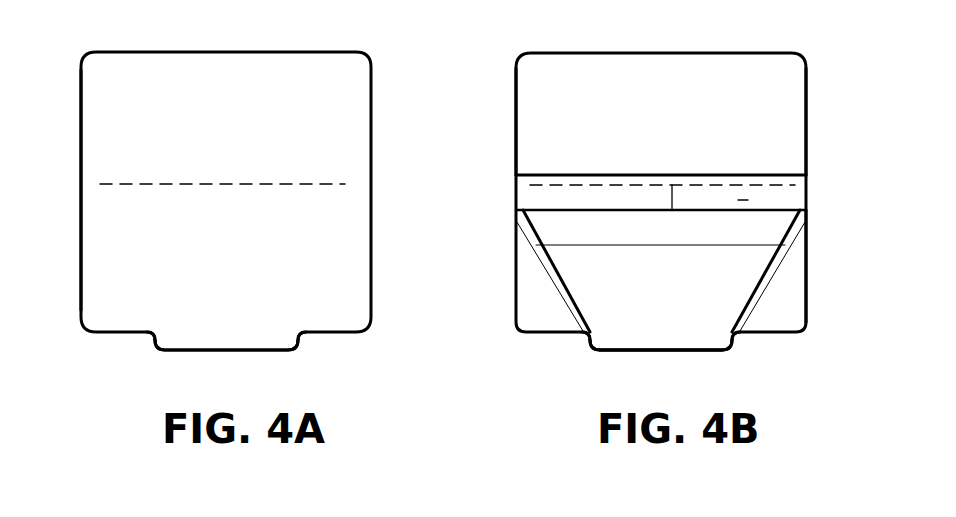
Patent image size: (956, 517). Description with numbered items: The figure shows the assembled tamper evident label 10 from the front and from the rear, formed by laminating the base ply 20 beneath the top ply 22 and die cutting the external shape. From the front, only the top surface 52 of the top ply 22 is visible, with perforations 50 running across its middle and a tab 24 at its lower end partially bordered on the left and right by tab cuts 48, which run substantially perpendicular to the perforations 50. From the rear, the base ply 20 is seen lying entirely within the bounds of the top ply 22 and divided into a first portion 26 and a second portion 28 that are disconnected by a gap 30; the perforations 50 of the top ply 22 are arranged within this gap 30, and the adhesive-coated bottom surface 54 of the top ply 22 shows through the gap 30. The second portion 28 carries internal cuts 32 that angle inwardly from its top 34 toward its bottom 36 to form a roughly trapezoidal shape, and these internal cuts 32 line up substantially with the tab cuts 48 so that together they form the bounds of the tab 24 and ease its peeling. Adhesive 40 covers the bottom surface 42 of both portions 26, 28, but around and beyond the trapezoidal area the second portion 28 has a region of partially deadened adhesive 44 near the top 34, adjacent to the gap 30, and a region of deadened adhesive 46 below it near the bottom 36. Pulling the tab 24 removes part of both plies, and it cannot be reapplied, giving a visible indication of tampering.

In FIG. 4A, the tamper evident label 10 is at (78, 48).
In FIG. 4B, the tamper evident label 10 is at (508, 48).
In FIG. 4B, the base ply 20 is at (514, 107).
In FIG. 4A, the top ply 22 is at (79, 125).
In FIG. 4B, the top ply 22 is at (514, 197).
In FIG. 4A, the tab 24 is at (230, 353).
In FIG. 4B, the tab 24 is at (661, 353).
In FIG. 4B, the first portion 26 is at (809, 103).
In FIG. 4B, the second portion 28 is at (809, 276).
In FIG. 4B, the gap 30 is at (795, 195).
In FIG. 4B, the internal cuts 32 is at (574, 292).
In FIG. 4B, the top 34 is at (672, 210).
In FIG. 4B, the bottom 36 is at (778, 334).
In FIG. 4B, the adhesive 40 is at (518, 123).
In FIG. 4B, the bottom surface 42 is at (672, 108).
In FIG. 4B, the partially deadened adhesive 44 is at (523, 222).
In FIG. 4B, the deadened adhesive 46 is at (550, 267).
In FIG. 4A, the tab cuts 48 is at (157, 326).
In FIG. 4B, the tab cuts 48 is at (594, 326).
In FIG. 4A, the perforations 50 is at (195, 183).
In FIG. 4B, the perforations 50 is at (599, 190).
In FIG. 4A, the top surface 52 is at (286, 138).
In FIG. 4B, the bottom surface 54 is at (738, 198).